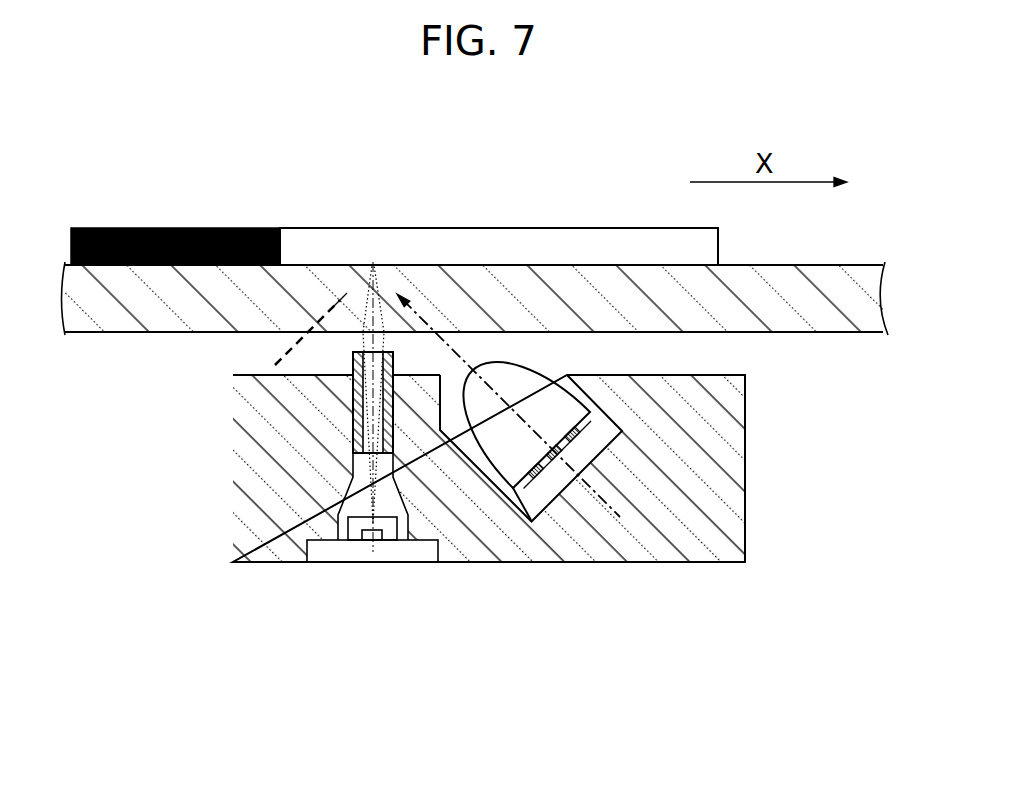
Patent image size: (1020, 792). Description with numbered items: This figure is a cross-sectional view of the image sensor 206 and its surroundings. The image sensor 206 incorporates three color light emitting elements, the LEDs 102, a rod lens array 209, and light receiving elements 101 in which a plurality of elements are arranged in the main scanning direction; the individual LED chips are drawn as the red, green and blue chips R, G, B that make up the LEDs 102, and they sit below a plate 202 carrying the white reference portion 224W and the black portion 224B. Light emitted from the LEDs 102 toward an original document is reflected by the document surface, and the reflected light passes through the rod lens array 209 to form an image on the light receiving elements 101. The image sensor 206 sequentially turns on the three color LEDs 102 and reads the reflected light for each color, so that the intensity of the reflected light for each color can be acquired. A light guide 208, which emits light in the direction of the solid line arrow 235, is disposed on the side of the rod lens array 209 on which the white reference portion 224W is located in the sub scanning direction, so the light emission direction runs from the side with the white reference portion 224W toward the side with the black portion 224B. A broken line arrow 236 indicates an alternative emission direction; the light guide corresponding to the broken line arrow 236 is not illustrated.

The light receiving elements 101 is at (370, 563).
The three color light emitting elements (LEDs) 102 is at (539, 577).
The red light emitting chip R is at (541, 474).
The green light emitting chip G is at (560, 460).
The blue light emitting chip B is at (579, 442).
The transparent plate 202 is at (518, 285).
The image sensor 206 is at (710, 530).
The light guide 208 is at (533, 388).
The rod lens array 209 is at (358, 397).
The black portion 224B is at (145, 228).
The white reference portion 224W is at (348, 245).
The solid line arrow 235 is at (428, 320).
The broken line arrow 236 is at (314, 333).